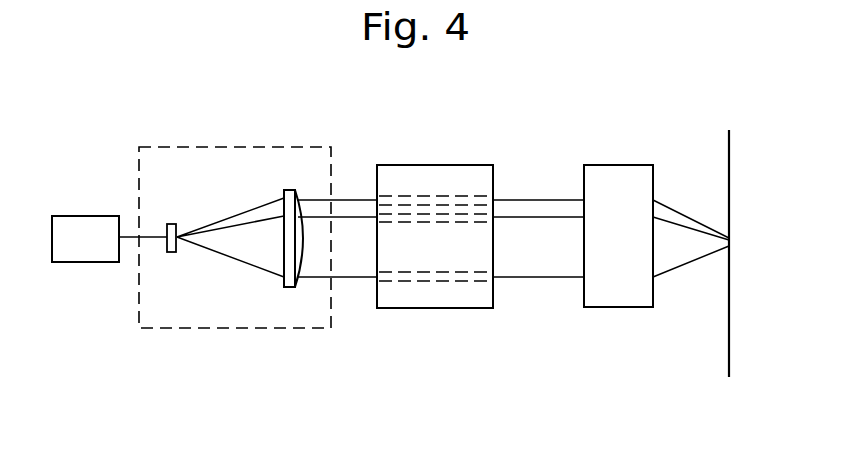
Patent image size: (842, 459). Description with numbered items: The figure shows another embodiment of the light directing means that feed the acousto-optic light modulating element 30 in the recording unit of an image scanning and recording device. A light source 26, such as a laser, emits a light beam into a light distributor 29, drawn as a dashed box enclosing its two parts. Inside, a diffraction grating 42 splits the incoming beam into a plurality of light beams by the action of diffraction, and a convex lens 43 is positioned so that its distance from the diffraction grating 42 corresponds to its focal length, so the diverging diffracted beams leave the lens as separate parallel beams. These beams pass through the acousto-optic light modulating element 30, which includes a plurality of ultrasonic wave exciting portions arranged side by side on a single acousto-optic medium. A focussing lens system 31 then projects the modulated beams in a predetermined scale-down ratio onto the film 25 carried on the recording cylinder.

The film 25 is at (729, 337).
The light source 26 is at (88, 254).
The light distributor 29 is at (227, 319).
The acousto-optic light modulating element 30 is at (430, 300).
The focussing lens system 31 is at (613, 308).
The diffraction grating 42 is at (175, 253).
The convex lens 43 is at (292, 281).